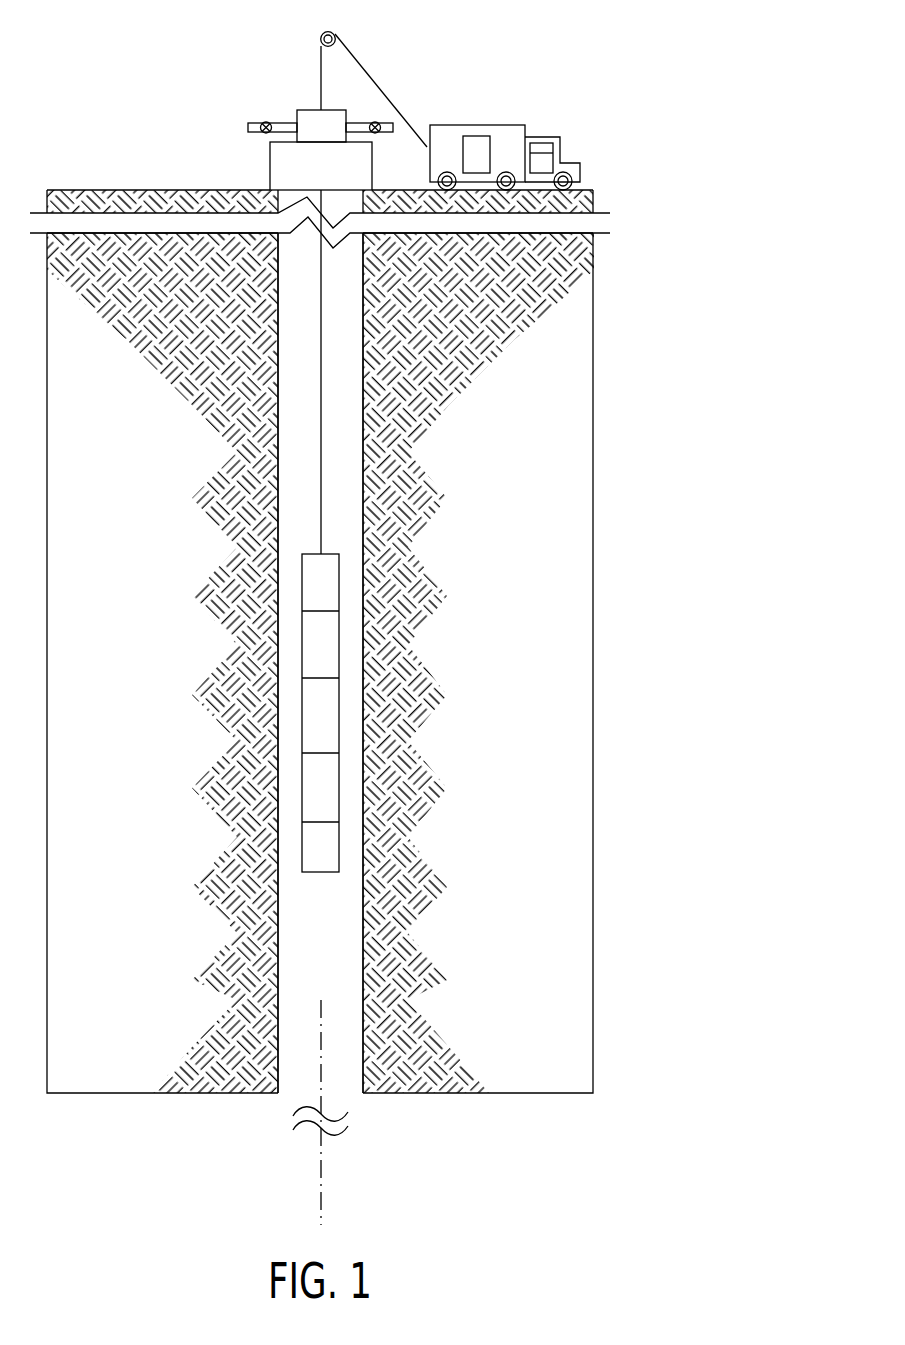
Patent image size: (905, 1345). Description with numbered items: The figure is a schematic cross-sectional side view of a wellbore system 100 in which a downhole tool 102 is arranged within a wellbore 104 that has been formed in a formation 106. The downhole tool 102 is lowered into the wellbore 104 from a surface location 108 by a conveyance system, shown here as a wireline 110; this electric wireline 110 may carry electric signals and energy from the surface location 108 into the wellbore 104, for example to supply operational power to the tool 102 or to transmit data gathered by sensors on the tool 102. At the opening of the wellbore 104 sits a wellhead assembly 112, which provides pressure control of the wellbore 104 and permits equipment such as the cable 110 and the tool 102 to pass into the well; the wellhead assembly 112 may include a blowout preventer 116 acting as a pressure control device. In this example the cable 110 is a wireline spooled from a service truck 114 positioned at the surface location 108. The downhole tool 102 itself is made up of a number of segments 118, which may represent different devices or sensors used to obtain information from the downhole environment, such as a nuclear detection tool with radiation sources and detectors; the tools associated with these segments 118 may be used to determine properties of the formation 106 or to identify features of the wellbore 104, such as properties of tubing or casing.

The wellbore system 100 is at (495, 47).
The downhole tool 102 is at (340, 395).
The wellbore 104 is at (363, 498).
The formation 106 is at (122, 546).
The surface location 108 is at (94, 191).
The wireline 110 is at (323, 297).
The wellhead assembly 112 is at (305, 92).
The service truck 114 is at (495, 125).
The blowout preventer 116 is at (226, 160).
The segments 118 is at (327, 575).